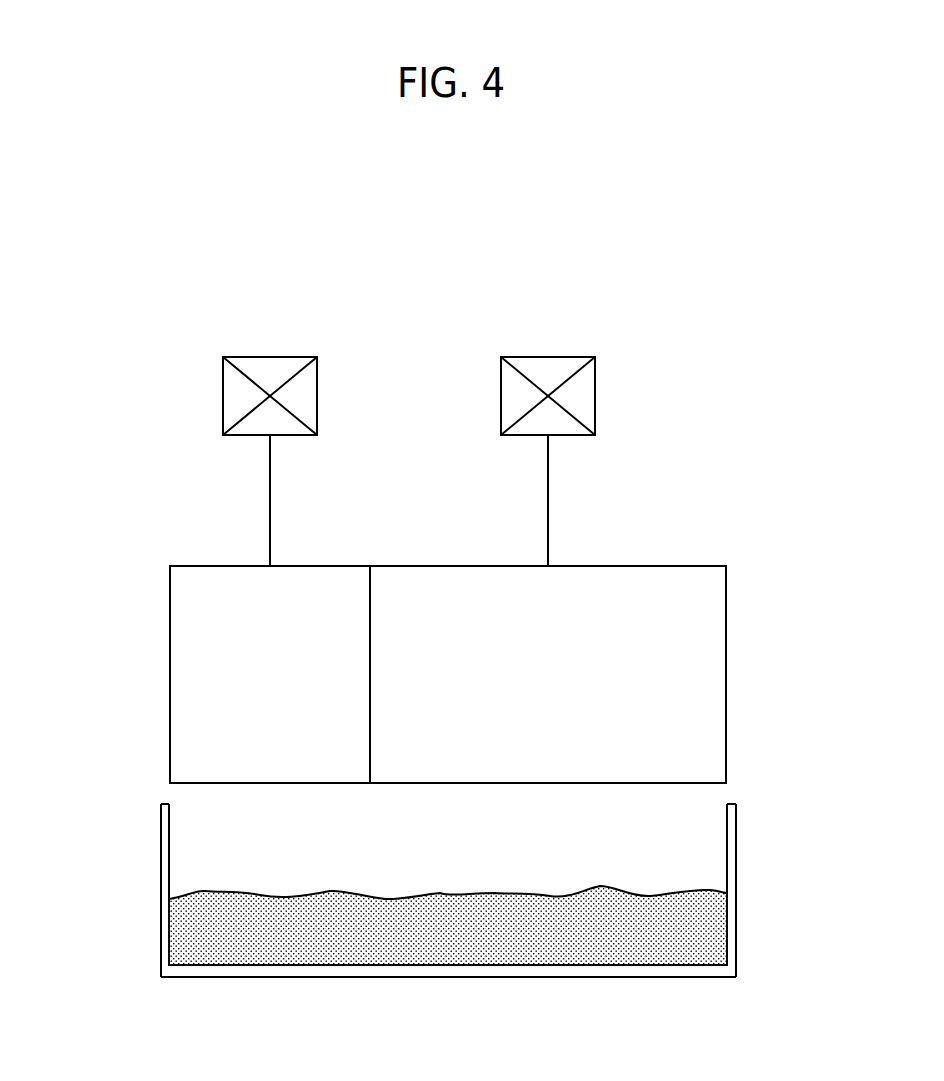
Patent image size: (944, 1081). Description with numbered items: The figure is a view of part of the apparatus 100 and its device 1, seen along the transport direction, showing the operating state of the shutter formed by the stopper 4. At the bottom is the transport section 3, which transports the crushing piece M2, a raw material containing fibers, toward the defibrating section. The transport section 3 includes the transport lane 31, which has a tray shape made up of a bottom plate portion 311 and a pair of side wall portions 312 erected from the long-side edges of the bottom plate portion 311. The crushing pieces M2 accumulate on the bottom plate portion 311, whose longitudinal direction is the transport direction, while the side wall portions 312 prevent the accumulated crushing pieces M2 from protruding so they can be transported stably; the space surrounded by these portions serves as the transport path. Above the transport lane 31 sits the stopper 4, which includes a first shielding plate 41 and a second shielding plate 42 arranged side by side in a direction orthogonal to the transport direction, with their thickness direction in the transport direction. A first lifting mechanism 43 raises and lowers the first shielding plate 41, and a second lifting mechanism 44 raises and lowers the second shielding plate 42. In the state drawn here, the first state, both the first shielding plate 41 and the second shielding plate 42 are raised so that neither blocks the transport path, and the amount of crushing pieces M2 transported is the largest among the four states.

The three-dimensional shaping system 100 is at (731, 236).
The three-dimensional shaping device 1 is at (458, 275).
The stopper 4 is at (152, 376).
The first shielding plate 41 is at (190, 676).
The second shielding plate 42 is at (710, 676).
The first lifting mechanism 43 is at (272, 357).
The second lifting mechanism 44 is at (549, 357).
The transport section 3 is at (150, 935).
The transport lane 31 is at (441, 978).
The bottom plate portion 311 is at (242, 973).
The side wall portion 312 is at (166, 855).
The crushing piece M2 is at (668, 933).